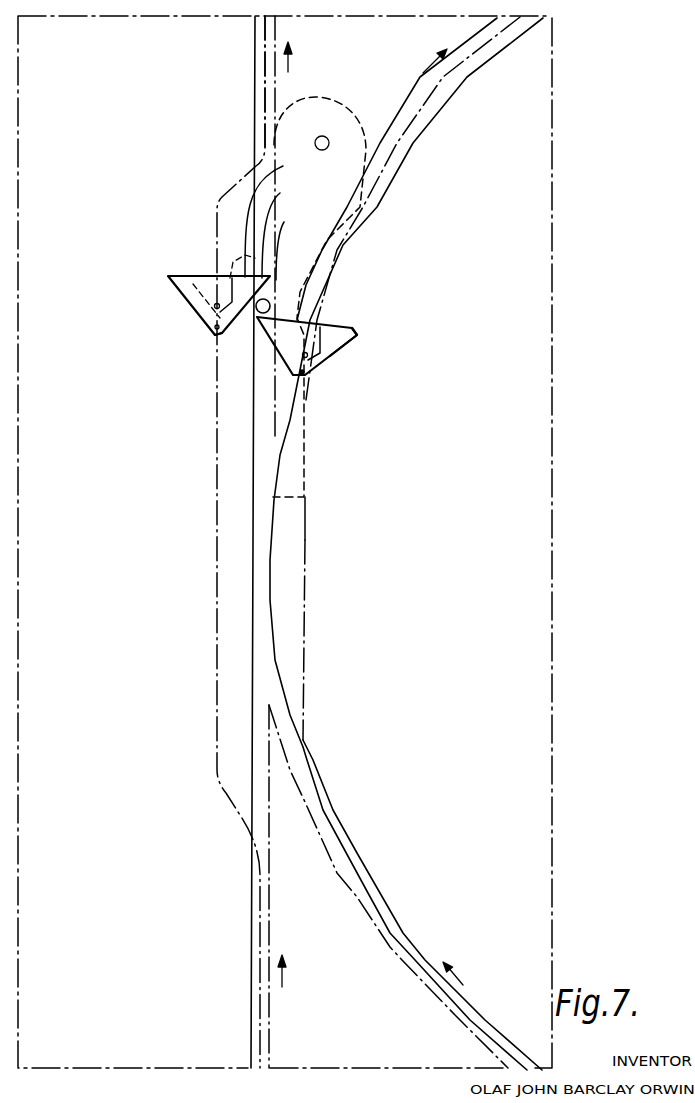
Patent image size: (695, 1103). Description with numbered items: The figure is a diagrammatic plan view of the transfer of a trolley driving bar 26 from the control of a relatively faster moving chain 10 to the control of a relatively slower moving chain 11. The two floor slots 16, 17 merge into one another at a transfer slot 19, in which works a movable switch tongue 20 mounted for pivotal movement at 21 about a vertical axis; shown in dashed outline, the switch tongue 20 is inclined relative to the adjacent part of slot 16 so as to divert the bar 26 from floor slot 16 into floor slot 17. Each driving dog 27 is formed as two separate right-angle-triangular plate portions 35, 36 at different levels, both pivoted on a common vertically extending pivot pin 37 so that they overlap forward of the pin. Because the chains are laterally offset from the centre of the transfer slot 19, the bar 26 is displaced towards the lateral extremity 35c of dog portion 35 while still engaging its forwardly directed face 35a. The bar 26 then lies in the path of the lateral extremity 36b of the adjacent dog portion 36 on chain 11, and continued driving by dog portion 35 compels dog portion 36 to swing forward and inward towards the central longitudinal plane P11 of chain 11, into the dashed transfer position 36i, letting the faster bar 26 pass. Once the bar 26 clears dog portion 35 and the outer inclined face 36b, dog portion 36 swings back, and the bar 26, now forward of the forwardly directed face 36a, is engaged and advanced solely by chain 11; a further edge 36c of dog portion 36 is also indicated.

The chain 10 is at (417, 930).
The chain 11 is at (260, 984).
The floor slot 16 is at (396, 895).
The floor slot 17 is at (252, 935).
The transfer slot 19 is at (252, 525).
The movable switch tongue 20 is at (303, 455).
The pivot 21 is at (328, 138).
The trolley driving bar 26 is at (268, 298).
The driving dog 27 is at (348, 330).
The dog portion 35 is at (285, 345).
The forwardly directed face 35a is at (316, 285).
The lateral extremity 35c is at (170, 375).
The dog portion 36 is at (277, 203).
The forwardly directed face 36a is at (319, 180).
The lateral extremity 36b is at (167, 350).
The latch edge 36c is at (321, 231).
The dog portion transfer position 36i is at (227, 267).
The pivot pin 37 is at (307, 354).
The central longitudinal plane P11 is at (263, 31).